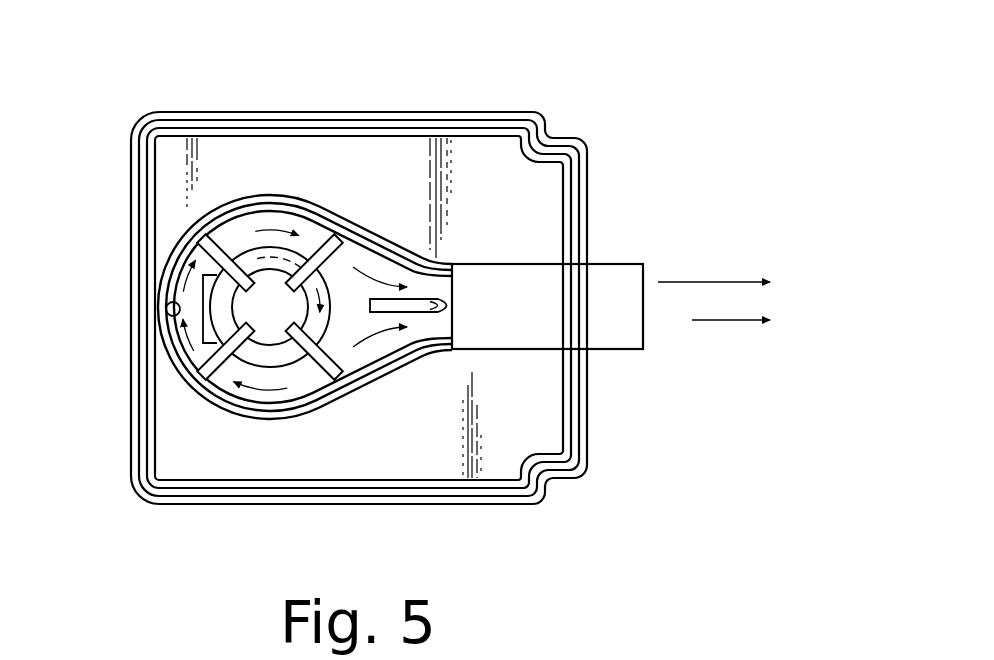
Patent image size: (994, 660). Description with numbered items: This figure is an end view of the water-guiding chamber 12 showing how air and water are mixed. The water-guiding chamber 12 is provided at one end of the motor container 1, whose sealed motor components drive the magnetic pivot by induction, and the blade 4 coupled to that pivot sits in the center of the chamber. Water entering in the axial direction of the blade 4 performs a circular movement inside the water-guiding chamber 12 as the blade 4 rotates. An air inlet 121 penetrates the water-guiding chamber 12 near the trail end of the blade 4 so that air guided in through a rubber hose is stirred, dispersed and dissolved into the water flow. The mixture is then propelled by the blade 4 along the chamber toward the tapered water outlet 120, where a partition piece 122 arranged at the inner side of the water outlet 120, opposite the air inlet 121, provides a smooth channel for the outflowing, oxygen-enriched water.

The motor container 1 is at (502, 113).
The water-guiding chamber 12 is at (330, 205).
The blade 4 is at (193, 223).
The air inlet 121 is at (171, 314).
The partition piece 122 is at (412, 306).
The water outlet 120 is at (608, 349).